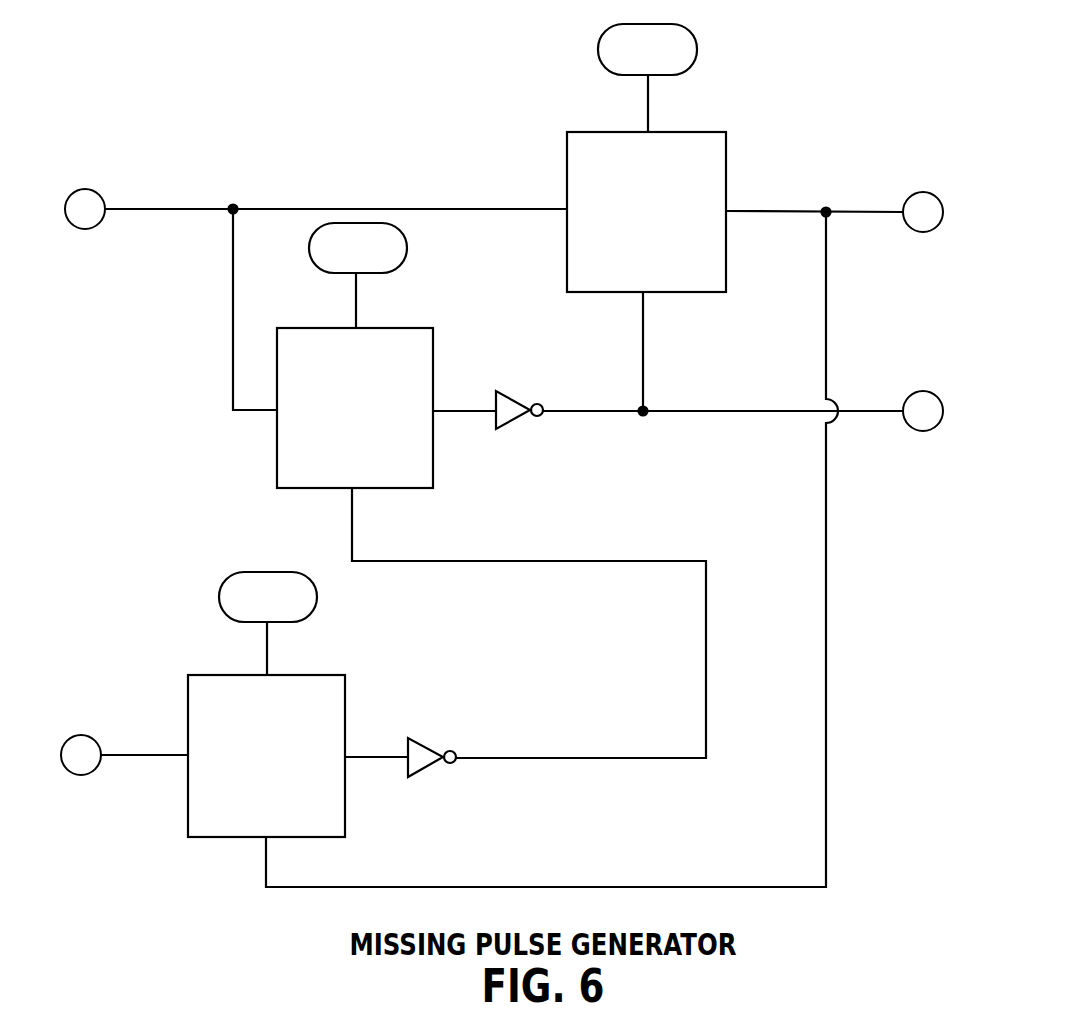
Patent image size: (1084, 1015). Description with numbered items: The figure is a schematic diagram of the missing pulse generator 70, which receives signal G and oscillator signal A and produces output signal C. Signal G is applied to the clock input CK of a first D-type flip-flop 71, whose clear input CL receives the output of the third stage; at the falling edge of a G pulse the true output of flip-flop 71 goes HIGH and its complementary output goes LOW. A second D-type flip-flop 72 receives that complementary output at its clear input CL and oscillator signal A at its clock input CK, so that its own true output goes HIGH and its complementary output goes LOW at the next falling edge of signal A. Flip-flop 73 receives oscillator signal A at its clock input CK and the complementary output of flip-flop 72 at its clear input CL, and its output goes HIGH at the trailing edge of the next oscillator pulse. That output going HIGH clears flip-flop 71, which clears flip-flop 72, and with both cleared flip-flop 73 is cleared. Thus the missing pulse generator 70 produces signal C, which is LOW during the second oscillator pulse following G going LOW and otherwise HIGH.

The missing pulse generator 70 is at (313, 108).
The first D-type flip-flop 71 is at (210, 674).
The second D-type flip-flop 72 is at (300, 327).
The flip-flop 73 is at (583, 131).